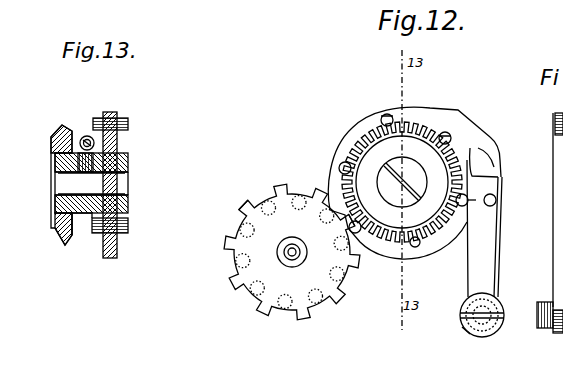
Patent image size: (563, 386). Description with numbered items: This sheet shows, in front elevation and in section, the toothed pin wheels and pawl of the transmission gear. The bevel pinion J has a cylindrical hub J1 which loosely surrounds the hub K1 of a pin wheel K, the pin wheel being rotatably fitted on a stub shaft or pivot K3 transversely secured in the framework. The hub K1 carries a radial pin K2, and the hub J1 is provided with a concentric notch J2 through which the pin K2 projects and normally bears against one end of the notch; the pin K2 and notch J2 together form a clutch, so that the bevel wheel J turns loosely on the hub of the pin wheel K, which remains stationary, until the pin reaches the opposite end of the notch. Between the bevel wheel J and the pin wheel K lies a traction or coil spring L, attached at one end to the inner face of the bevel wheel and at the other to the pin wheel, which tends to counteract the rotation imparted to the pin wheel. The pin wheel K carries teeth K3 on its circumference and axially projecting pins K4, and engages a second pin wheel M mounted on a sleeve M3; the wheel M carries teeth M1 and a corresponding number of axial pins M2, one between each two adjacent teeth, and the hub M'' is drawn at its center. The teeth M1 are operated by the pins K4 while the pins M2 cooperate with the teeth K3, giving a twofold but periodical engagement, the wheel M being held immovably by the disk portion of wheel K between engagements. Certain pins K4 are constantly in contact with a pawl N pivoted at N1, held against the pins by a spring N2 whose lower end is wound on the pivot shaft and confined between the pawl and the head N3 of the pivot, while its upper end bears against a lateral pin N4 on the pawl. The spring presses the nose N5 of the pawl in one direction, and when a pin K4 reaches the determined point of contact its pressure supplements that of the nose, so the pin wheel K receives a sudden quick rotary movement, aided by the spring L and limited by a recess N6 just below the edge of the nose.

In FIG. 13, the bevel pinion J is at (56, 132).
In FIG. 12, the bevel pinion J is at (404, 122).
In FIG. 13, the cylindrical hub J1 is at (80, 215).
In FIG. 13, the concentric notch J2 is at (82, 165).
In FIG. 13, the coil spring L is at (89, 134).
In FIG. 13, the pin wheel K is at (117, 143).
In FIG. 12, the pin wheel K is at (348, 138).
In FIG. 13, the hub K1 is at (96, 220).
In FIG. 13, the radial pin K2 is at (90, 173).
In FIG. 12, the stub shaft K3 is at (365, 115).
In FIG. 13, the axially projecting pins K4 is at (128, 232).
In FIG. 12, the axially projecting pins K4 is at (386, 114).
In FIG. 12, the pin wheel M is at (292, 269).
In FIG. 12, the teeth M1 is at (243, 203).
In FIG. 12, the pins M2 is at (269, 199).
In FIG. 12, the sleeve M3 is at (301, 262).
In FIG. 12, the wheel hub M'' is at (301, 294).
In FIG. 12, the pawl N is at (487, 243).
In FIG. 12, the pivot N1 is at (483, 316).
In FIG. 12, the spring N2 is at (502, 212).
In FIG. 12, the head N3 is at (497, 332).
In FIG. 12, the lateral pin N4 is at (495, 198).
In FIG. 12, the nose N5 is at (473, 132).
In FIG. 12, the recess N6 is at (477, 149).